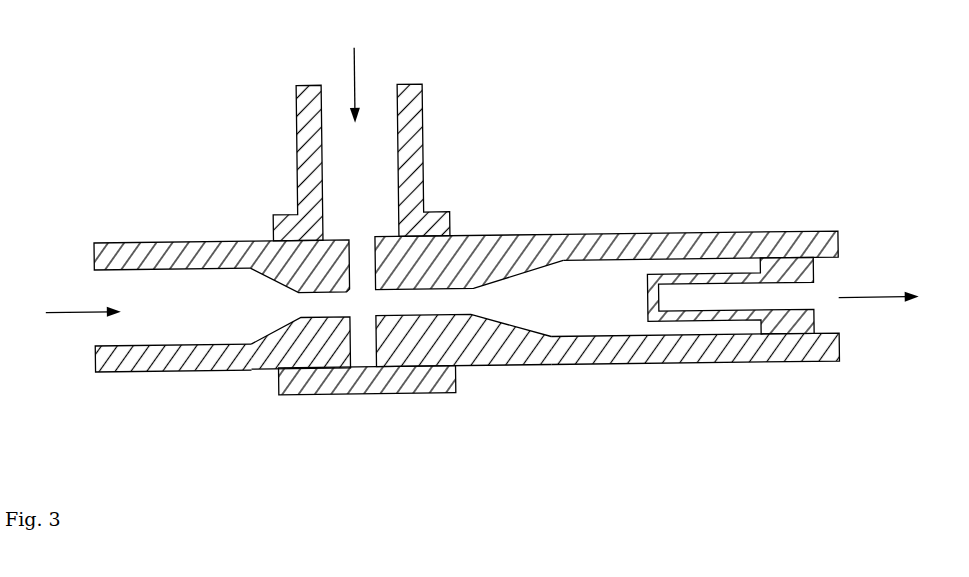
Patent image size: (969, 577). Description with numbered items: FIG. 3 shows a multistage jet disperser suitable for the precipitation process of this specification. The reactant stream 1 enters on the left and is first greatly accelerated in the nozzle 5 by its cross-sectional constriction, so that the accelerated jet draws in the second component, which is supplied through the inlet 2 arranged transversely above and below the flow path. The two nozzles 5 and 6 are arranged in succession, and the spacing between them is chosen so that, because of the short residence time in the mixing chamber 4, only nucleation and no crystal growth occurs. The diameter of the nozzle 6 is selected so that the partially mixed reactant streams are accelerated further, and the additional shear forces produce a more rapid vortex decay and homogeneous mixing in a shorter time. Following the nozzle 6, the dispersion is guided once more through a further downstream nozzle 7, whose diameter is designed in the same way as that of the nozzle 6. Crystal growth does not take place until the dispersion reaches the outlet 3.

The reactant stream 1 is at (159, 297).
The injection inlet 2 is at (381, 139).
The outlet 3 is at (570, 291).
The mixing chamber 4 is at (363, 345).
The nozzle 5 is at (324, 305).
The nozzle 6 is at (403, 309).
The nozzle 7 is at (810, 256).